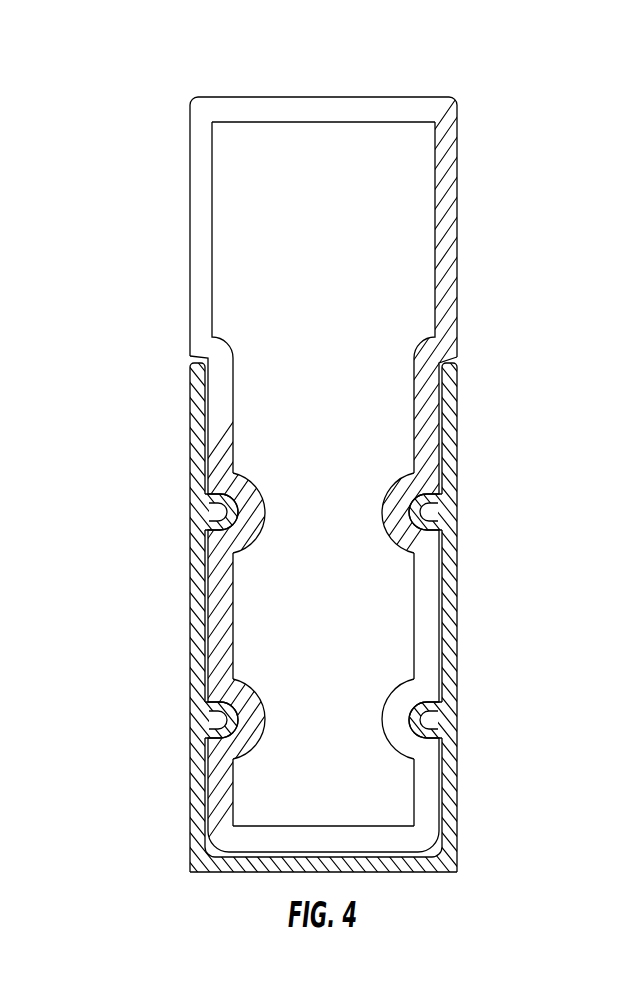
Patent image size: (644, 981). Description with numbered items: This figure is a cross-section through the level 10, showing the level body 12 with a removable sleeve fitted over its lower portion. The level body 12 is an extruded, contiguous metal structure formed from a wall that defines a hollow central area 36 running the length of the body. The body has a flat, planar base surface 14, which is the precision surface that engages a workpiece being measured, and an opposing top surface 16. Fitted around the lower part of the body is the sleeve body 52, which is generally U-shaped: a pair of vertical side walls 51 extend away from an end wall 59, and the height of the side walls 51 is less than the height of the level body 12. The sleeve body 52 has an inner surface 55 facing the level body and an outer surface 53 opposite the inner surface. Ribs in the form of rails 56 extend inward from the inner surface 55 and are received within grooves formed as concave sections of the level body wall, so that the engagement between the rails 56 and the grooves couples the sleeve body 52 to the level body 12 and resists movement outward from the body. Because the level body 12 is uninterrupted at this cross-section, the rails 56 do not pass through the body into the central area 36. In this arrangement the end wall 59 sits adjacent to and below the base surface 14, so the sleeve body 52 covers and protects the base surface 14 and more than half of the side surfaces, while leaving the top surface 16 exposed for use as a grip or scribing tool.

The level 10 is at (560, 178).
The body 12 is at (487, 145).
The base surface 14 is at (295, 853).
The top surface 16 is at (320, 97).
The hollow central area 36 is at (250, 160).
The vertical side walls 51 is at (202, 392).
The sleeve body 52 is at (458, 408).
The outer surface 53 is at (188, 495).
The inner surface 55 is at (207, 432).
The rails 56 is at (220, 720).
The end wall 59 is at (392, 868).